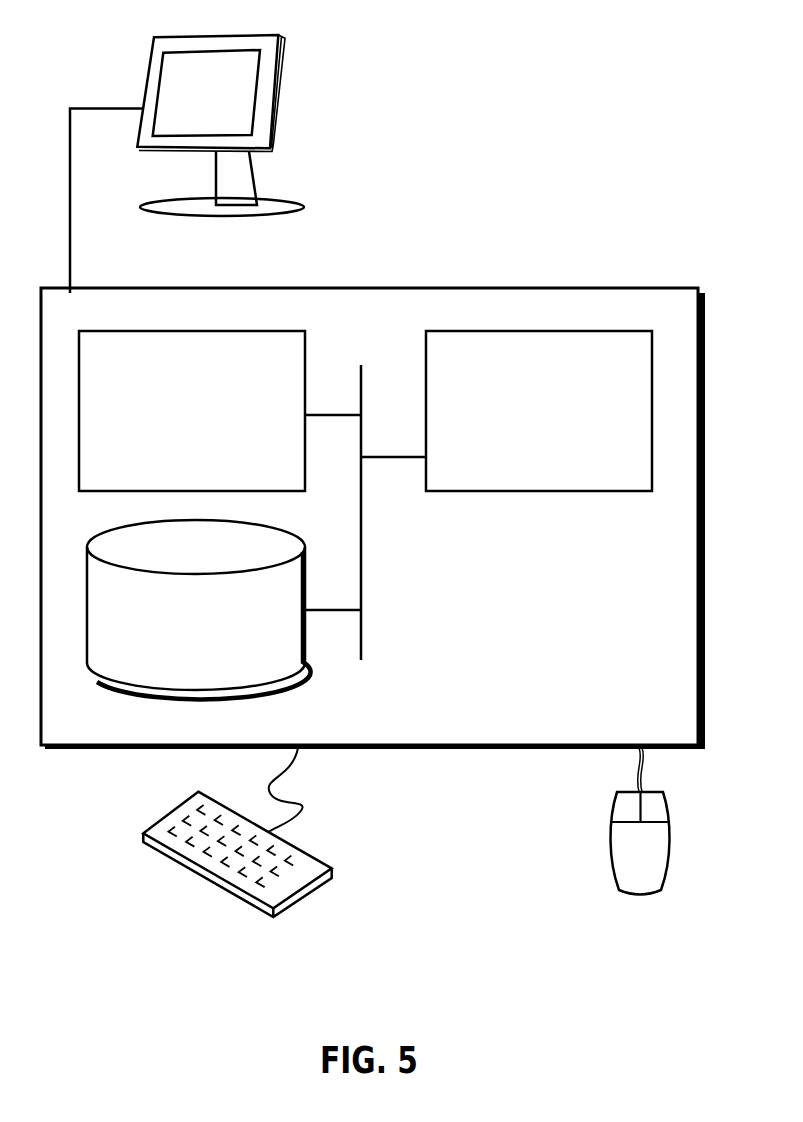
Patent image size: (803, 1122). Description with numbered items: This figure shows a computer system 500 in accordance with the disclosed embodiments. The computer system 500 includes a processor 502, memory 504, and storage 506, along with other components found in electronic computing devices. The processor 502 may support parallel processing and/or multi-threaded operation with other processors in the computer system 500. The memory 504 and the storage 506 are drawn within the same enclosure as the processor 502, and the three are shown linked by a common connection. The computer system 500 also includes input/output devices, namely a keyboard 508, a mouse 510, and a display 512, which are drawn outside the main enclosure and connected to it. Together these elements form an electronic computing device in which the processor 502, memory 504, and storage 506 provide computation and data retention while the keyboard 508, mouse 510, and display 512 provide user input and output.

The computer system 500 is at (417, 267).
The processor 502 is at (562, 423).
The memory 504 is at (214, 422).
The storage 506 is at (219, 633).
The keyboard 508 is at (162, 855).
The mouse 510 is at (660, 864).
The display 512 is at (187, 164).